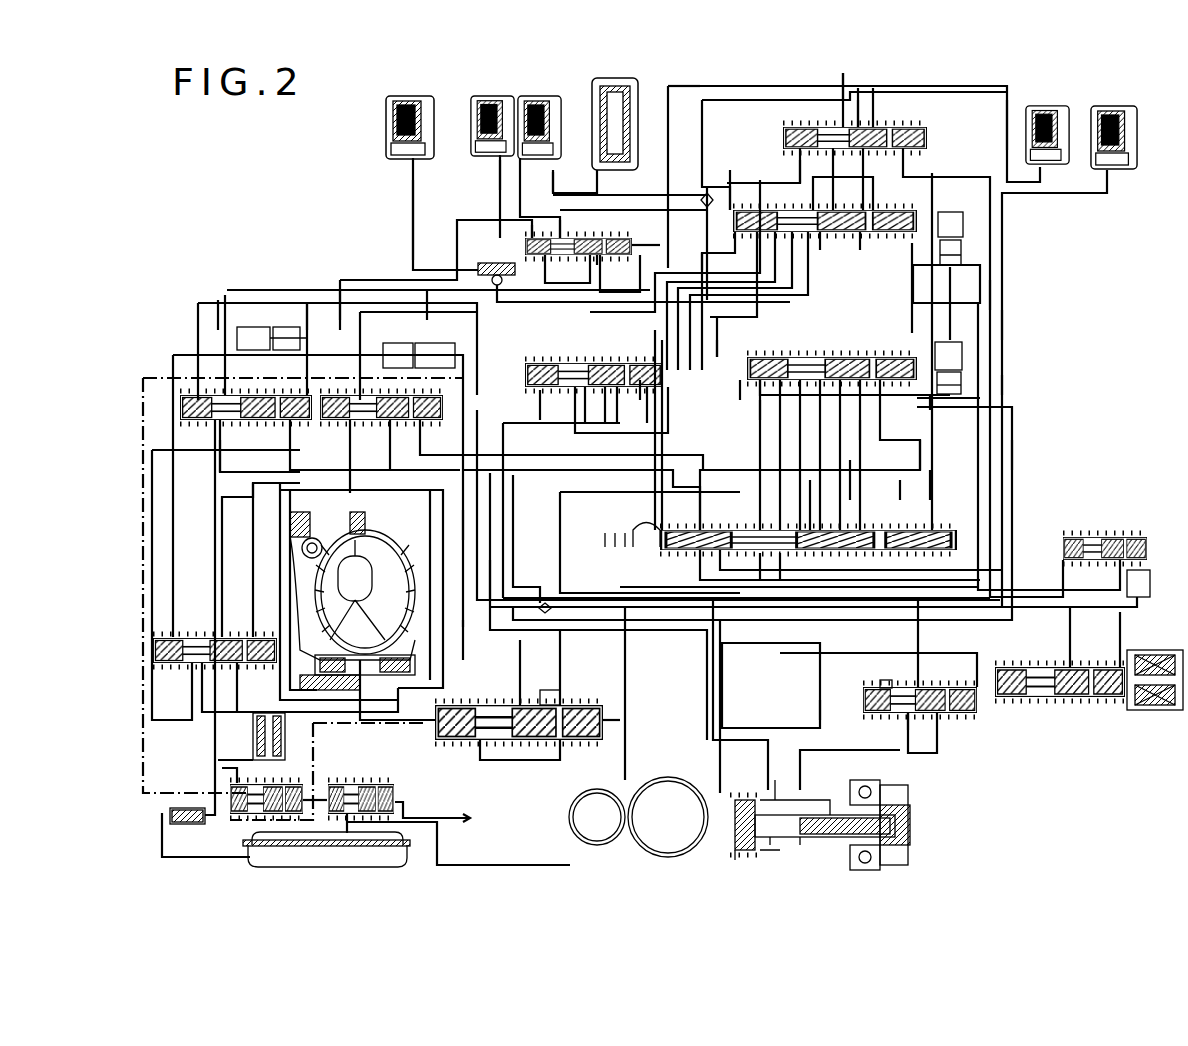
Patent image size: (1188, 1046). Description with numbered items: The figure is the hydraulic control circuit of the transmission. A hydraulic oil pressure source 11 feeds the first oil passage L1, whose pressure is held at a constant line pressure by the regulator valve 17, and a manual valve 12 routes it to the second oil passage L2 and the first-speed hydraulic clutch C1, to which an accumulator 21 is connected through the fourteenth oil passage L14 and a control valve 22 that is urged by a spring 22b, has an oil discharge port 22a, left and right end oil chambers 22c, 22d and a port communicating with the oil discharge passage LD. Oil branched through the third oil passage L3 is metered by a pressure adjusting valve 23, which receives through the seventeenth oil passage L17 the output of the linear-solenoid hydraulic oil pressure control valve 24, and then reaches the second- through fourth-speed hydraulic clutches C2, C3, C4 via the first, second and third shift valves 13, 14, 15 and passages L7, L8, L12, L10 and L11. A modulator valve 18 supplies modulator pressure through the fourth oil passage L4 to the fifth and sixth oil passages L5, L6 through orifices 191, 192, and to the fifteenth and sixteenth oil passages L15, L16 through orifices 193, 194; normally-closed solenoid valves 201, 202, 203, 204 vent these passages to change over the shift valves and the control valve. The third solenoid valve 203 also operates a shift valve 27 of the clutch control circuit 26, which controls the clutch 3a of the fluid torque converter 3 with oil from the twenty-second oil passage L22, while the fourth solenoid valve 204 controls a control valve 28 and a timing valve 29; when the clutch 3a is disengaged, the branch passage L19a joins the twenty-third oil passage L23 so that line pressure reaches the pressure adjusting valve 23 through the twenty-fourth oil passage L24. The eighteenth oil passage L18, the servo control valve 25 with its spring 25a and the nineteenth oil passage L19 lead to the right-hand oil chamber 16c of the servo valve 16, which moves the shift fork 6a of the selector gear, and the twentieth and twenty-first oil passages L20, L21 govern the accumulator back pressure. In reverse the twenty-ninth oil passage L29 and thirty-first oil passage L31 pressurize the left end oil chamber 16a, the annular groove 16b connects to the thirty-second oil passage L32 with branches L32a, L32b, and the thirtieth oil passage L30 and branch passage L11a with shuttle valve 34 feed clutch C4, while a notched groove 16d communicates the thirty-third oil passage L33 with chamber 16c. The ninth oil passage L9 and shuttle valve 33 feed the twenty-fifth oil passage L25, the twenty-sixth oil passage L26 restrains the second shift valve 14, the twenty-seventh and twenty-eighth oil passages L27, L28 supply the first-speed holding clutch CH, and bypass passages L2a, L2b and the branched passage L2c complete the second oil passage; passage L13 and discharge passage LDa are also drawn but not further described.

The fluid torque converter 3 is at (415, 610).
The clutch 3a is at (300, 590).
The shift fork 6a is at (905, 795).
The hydraulic oil pressure source 11 is at (638, 775).
The manual valve 12 is at (690, 528).
The No. 1 shift valve 13 is at (868, 355).
The No. 2 shift valve 14 is at (915, 208).
The No. 3 shift valve 15 is at (932, 140).
The servo valve 16 is at (735, 785).
The left end oil chamber 16a is at (735, 850).
The annular groove 16b is at (800, 840).
The right-hand oil chamber 16c is at (765, 850).
The notched groove 16d is at (778, 800).
The regulator valve 17 is at (540, 745).
The modulator valve 18 is at (1108, 537).
The orifice 191 is at (960, 398).
The orifice 192 is at (960, 268).
The orifice 193 is at (300, 325).
The orifice 194 is at (365, 355).
The No. 1 solenoid valve 201 is at (965, 352).
The No. 2 solenoid valve 202 is at (966, 222).
The No. 3 solenoid valve 203 is at (252, 325).
The No. 4 solenoid valve 204 is at (415, 345).
The accumulator 21 is at (596, 80).
The control valve 22 is at (520, 244).
The oil discharge port 22a is at (560, 236).
The spring 22b is at (605, 270).
The left end oil chamber 22c is at (528, 238).
The right end oil chamber 22d is at (626, 245).
The pressure adjusting valve 23 is at (585, 360).
The hydraulic oil pressure control valve 24 is at (1082, 700).
The servo control valve 25 is at (920, 718).
The spring 25a is at (890, 685).
The clutch control circuit 26 is at (312, 763).
The shift valve 27 is at (210, 392).
The control valve 28 is at (432, 425).
The timing valve 29 is at (200, 630).
The shuttle valve 33 is at (550, 612).
The shuttle valve 34 is at (705, 195).
The first-speed hydraulic clutch C1 is at (388, 118).
The second-speed hydraulic clutch C2 is at (473, 118).
The third-speed hydraulic clutch C3 is at (1060, 108).
The fourth-speed hydraulic clutch C4 is at (528, 100).
The first-speed holding clutch CH is at (1130, 112).
The oil discharge passage LD is at (678, 90).
The oil line LDa is at (852, 83).
The No. 1 oil passage L1 is at (785, 575).
The No. 2 oil passage L2 is at (410, 190).
The No. 1 bypass passage L2a is at (800, 445).
The No. 2 bypass passage L2b is at (768, 430).
The branched oil passage L2c is at (487, 668).
The No. 3 oil passage L3 is at (870, 417).
The No. 4 oil passage L4 is at (275, 303).
The No. 5 oil passage L5 is at (923, 418).
The No. 6 oil passage L6 is at (992, 320).
The No. 7 oil passage L7 is at (498, 175).
The No. 8 oil passage L8 is at (853, 290).
The No. 9 oil passage L9 is at (915, 470).
The No. 10 oil passage L10 is at (1008, 92).
The No. 11 oil passage L11 is at (620, 196).
The branch oil passage L11a is at (905, 510).
The No. 12 oil passage L12 is at (880, 130).
The oil line L13 is at (825, 160).
The No. 14 oil passage L14 is at (575, 192).
The No. 15 oil passage L15 is at (340, 280).
The No. 16 oil passage L16 is at (410, 315).
The No. 17 oil passage L17 is at (490, 538).
The No. 18 oil passage L18 is at (762, 570).
The No. 19 oil passage L19 is at (748, 375).
The branch oil passage L19a is at (215, 460).
The No. 20 oil passage L20 is at (740, 150).
The No. 21 oil passage L21 is at (775, 250).
The No. 22 oil passage L22 is at (510, 560).
The No. 23 oil passage L23 is at (227, 295).
The No. 24 oil passage L24 is at (550, 405).
The No. 25 oil passage L25 is at (735, 200).
The No. 26 oil passage L26 is at (730, 358).
The No. 27 oil passage L27 is at (900, 470).
The No. 28 oil passage L28 is at (1003, 383).
The No. 29 oil passage L29 is at (810, 505).
The No. 30 oil passage L30 is at (1005, 327).
The No. 31 oil passage L31 is at (1014, 455).
The No. 32 oil passage L32 is at (822, 690).
The branch oil passage L32a is at (590, 360).
The branch oil passage L32b is at (825, 275).
The No. 33 oil passage L33 is at (910, 753).